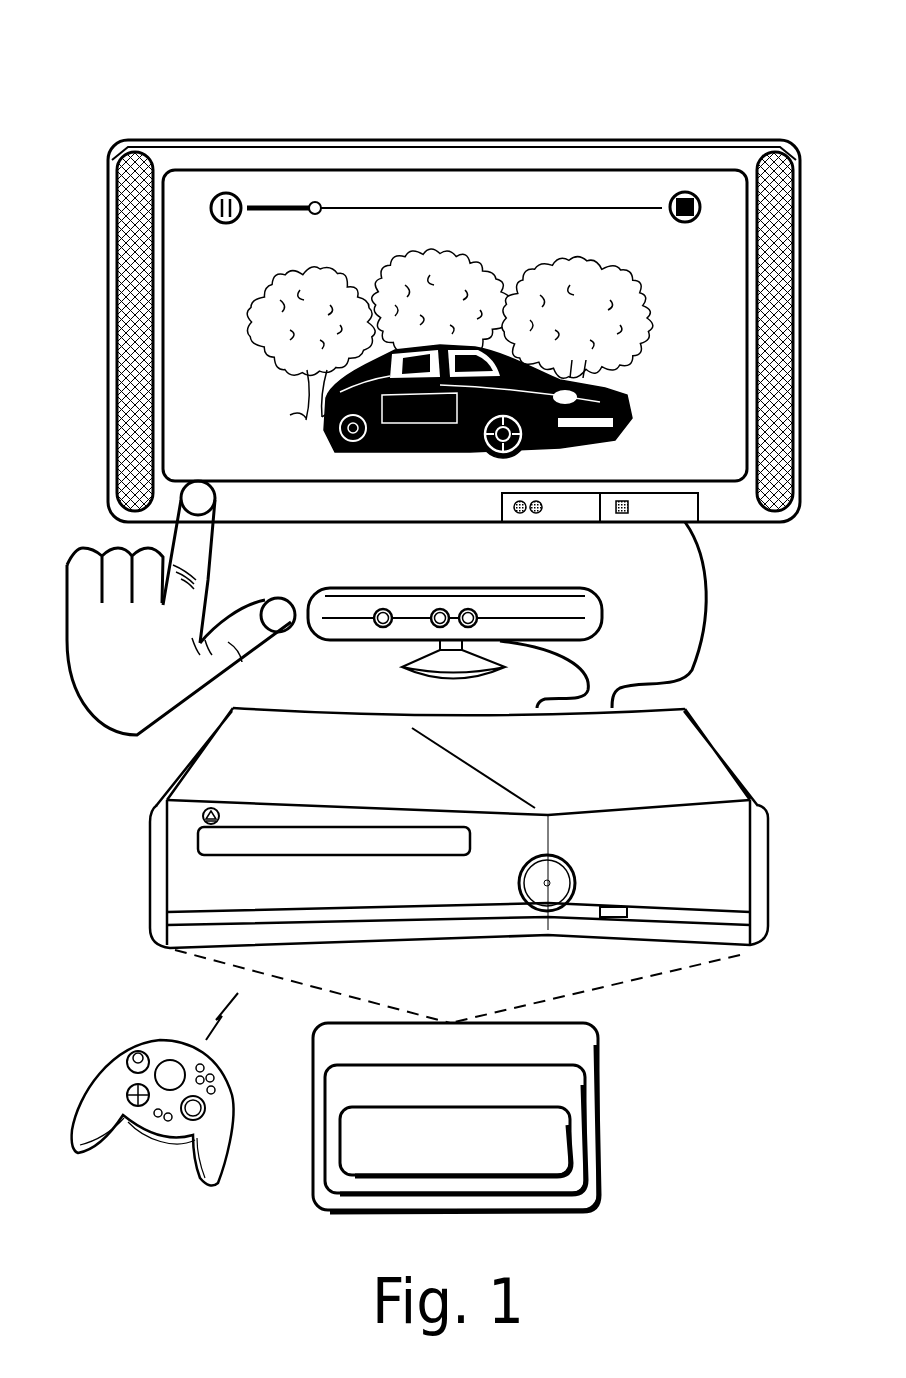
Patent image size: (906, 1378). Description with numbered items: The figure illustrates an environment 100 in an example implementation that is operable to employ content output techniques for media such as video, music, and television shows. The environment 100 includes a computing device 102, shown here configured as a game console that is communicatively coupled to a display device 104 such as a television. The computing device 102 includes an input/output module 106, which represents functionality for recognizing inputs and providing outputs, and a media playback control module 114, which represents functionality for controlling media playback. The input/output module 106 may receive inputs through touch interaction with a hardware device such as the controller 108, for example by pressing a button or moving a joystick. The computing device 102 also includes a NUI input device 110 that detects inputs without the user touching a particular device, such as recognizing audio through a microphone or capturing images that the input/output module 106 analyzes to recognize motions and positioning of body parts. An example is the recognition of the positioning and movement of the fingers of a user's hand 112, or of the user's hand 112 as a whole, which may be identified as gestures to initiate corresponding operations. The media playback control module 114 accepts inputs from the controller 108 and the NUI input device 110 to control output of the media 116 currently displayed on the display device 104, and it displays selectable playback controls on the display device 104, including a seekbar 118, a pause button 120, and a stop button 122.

The environment 100 is at (146, 60).
The computing device 102 is at (459, 960).
The display device 104 is at (454, 424).
The input/output module 106 is at (455, 1129).
The controller 108 is at (150, 1042).
The NUI input device 110 is at (452, 588).
The user's hand 112 is at (181, 608).
The media playback control module 114 is at (455, 1141).
The media 116 is at (662, 266).
The seekbar 118 is at (229, 250).
The pause button 120 is at (218, 196).
The stop button 122 is at (672, 196).